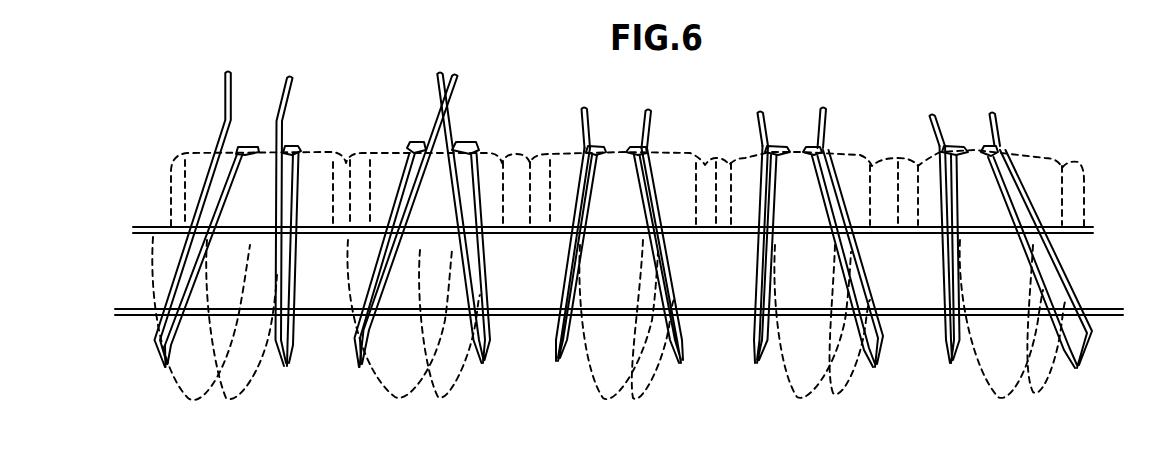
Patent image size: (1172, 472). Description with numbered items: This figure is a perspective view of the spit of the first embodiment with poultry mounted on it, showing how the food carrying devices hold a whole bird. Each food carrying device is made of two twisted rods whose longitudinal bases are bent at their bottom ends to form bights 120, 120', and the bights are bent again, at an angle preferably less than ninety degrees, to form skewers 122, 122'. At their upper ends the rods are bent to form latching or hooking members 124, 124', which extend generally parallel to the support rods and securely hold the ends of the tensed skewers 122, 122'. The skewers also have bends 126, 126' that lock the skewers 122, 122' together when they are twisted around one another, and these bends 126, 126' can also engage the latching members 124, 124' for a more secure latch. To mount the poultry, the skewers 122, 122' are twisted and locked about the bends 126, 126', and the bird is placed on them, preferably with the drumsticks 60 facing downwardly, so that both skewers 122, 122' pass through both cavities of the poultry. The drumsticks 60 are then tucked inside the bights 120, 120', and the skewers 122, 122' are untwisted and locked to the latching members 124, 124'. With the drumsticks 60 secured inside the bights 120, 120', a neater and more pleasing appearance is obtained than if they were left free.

The drumsticks 60 is at (601, 396).
The bight 120 is at (203, 216).
The bight 120' is at (317, 227).
The skewer 122 is at (205, 196).
The skewer 122' is at (317, 206).
The latching member 124 is at (254, 120).
The latching member 124' is at (320, 128).
The bend 126 is at (476, 218).
The bend 126' is at (406, 220).